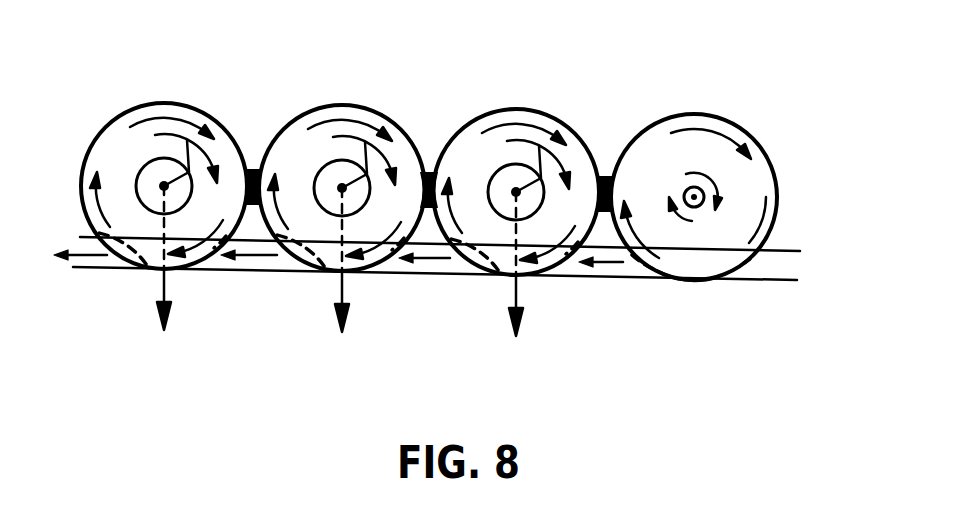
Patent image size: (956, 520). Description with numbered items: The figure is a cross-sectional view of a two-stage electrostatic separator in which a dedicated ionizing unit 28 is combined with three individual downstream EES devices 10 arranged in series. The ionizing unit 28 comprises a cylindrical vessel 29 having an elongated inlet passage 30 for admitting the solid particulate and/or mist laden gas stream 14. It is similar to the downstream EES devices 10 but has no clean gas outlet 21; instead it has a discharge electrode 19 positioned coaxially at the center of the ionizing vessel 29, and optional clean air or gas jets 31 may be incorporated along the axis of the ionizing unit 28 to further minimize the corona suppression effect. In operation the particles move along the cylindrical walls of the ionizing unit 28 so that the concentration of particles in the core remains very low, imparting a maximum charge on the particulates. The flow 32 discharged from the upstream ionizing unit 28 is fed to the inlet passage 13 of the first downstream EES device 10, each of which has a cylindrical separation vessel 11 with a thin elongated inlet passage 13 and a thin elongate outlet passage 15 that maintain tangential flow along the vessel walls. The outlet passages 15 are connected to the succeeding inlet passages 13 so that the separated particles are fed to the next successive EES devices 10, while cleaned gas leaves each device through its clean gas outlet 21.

The EES device 10 is at (143, 70).
The cylindrical separation vessel 11 is at (183, 104).
The inlet passage 13 is at (217, 255).
The gas stream 14 is at (784, 268).
The outlet passage 15 is at (92, 255).
The discharge electrode 19 is at (703, 191).
The clean gas outlet 21 is at (160, 320).
The dedicated ionizing unit 28 is at (677, 75).
The cylindrical vessel 29 is at (708, 114).
The elongated inlet passage 30 is at (757, 263).
The clean air or gas jets 31 is at (728, 188).
The flow 32 is at (613, 262).